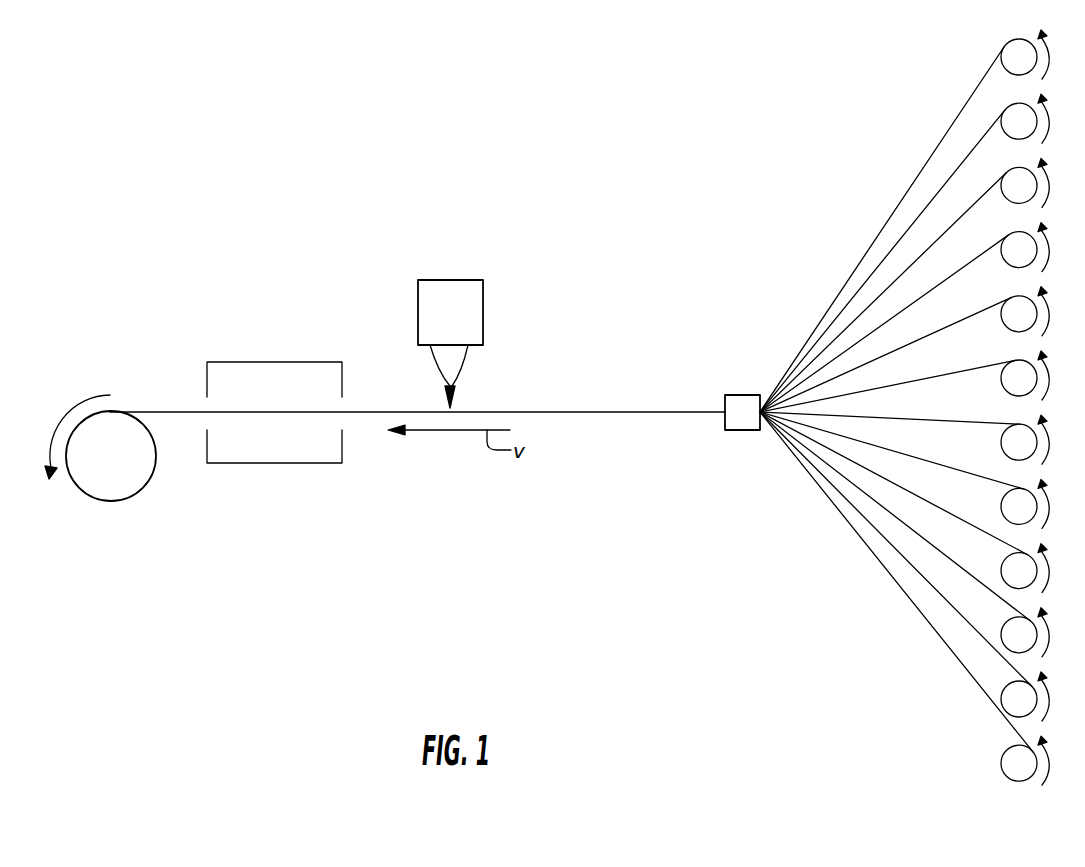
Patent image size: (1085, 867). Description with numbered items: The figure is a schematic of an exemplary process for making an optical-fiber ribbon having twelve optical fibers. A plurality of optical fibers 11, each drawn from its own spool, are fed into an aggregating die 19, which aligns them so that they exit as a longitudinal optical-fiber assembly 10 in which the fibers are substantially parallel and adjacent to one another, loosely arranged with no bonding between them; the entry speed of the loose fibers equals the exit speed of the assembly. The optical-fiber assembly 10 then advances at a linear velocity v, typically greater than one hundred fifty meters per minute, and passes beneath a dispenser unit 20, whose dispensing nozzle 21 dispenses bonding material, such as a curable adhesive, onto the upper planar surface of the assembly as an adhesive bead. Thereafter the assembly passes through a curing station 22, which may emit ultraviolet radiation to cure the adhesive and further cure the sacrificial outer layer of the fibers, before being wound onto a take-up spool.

The longitudinal optical-fiber assembly 10 is at (602, 412).
The optical fibers 11 is at (968, 101).
The die 19 is at (733, 395).
The dispenser unit 20 is at (466, 280).
The dispensing nozzle 21 is at (462, 371).
The curing station 22 is at (296, 362).